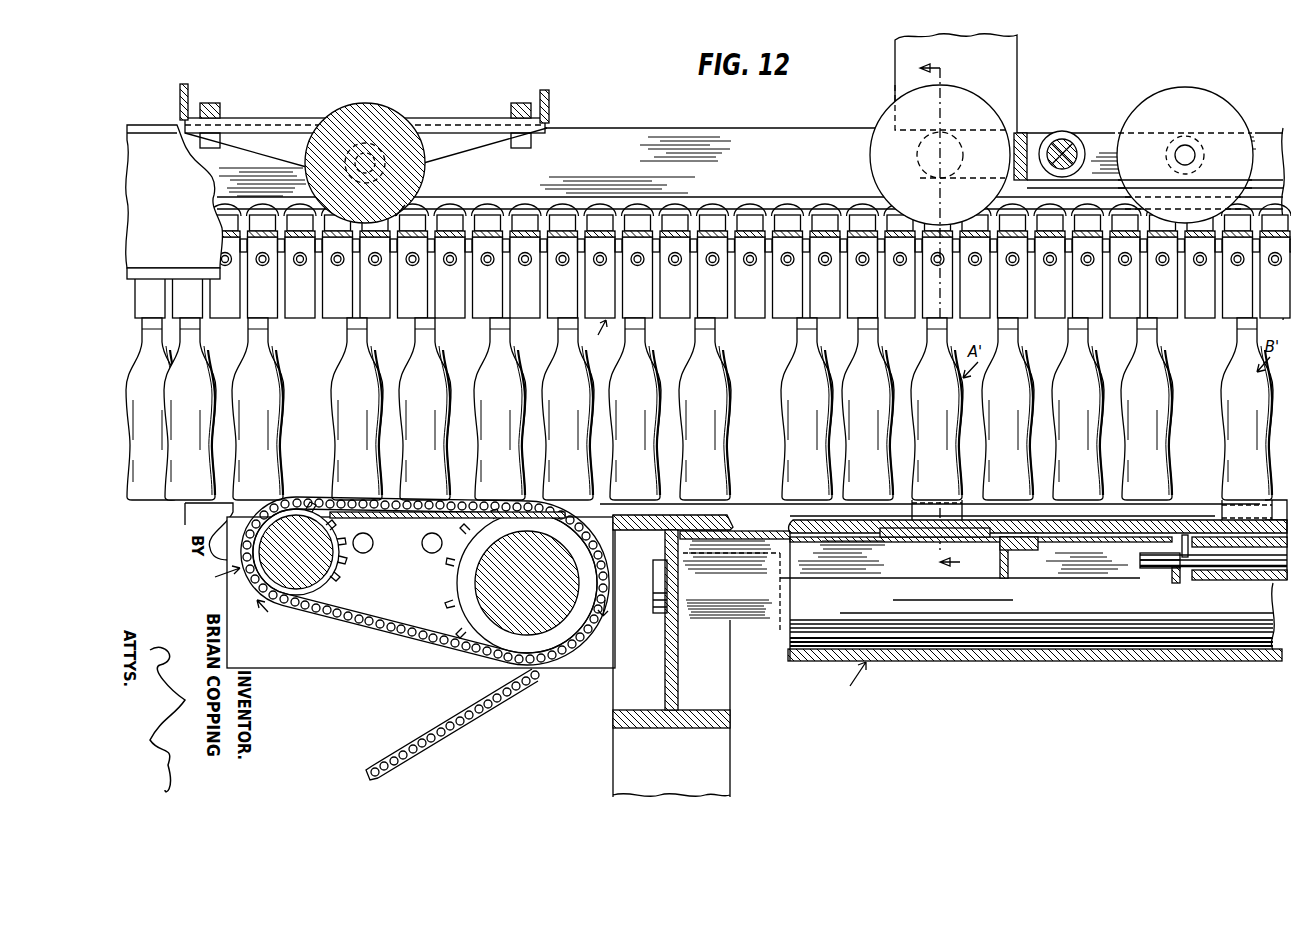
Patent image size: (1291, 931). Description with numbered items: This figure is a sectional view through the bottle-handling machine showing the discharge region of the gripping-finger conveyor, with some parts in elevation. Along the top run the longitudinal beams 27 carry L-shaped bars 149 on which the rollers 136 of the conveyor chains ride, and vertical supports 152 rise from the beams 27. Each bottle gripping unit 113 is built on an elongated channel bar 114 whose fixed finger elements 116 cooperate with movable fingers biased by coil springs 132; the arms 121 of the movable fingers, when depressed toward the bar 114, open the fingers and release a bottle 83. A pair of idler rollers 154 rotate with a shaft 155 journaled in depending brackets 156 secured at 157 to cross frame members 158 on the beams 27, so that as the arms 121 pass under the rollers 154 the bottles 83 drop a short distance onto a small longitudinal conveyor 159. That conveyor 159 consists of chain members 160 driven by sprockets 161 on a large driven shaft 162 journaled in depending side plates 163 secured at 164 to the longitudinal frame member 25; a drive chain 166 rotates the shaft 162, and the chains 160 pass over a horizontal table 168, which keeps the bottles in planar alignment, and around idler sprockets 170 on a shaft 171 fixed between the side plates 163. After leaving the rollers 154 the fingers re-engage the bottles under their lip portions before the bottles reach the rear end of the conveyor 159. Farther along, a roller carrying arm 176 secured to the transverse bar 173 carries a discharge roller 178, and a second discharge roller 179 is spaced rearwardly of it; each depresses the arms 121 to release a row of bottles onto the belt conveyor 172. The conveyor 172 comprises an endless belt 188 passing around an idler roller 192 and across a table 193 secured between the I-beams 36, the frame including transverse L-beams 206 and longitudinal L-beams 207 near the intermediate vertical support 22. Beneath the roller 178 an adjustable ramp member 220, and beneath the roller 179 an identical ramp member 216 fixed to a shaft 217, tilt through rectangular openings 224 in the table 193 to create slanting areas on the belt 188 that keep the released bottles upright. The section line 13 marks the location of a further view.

The beam 27 is at (148, 130).
The finger element 116 is at (320, 312).
The roller 136 is at (215, 196).
The L-shaped bar 149 is at (480, 197).
The arm 121 is at (225, 206).
The channel bar 114 is at (672, 240).
The coil spring 132 is at (525, 263).
The depending bracket 156 is at (465, 145).
The bracket securing means 157 is at (222, 108).
The cross frame member 158 is at (188, 92).
The idler roller 154 is at (398, 112).
The shaft 155 is at (405, 205).
The vertical support 152 is at (895, 92).
The roller 178 is at (878, 128).
The section line 13- 13 is at (945, 309).
The roller carrying arm 176 is at (1022, 145).
The transverse bar 173 is at (1090, 140).
The roller 179 is at (1148, 108).
The bottle 83 is at (492, 345).
The bottle gripping unit 113 is at (592, 336).
The longitudinal frame member 25 is at (200, 522).
The side plate 163 is at (235, 600).
The table 168 is at (375, 520).
The securing means 164 is at (432, 552).
The sprocket 161 is at (458, 596).
The driven shaft 162 is at (475, 585).
The idler sprocket 170 is at (332, 583).
The shaft 171 is at (292, 590).
The chain member 160 is at (385, 628).
The longitudinal conveyor 159 is at (215, 580).
The drive chain 166 is at (485, 688).
The intermediate vertical support 22 is at (725, 674).
The I-beam 36 is at (665, 640).
The table 193 is at (668, 549).
The L-beam 206 is at (765, 576).
The endless belt 188 is at (790, 526).
The idler roller 192 is at (1055, 633).
The conveyor 172 is at (841, 680).
The adjustable ramp member 220 is at (935, 540).
The opening 224 is at (880, 545).
The longitudinal L-beam 207 is at (1002, 578).
The adjustable ramp member 216 is at (1228, 580).
The shaft 217 is at (1165, 568).